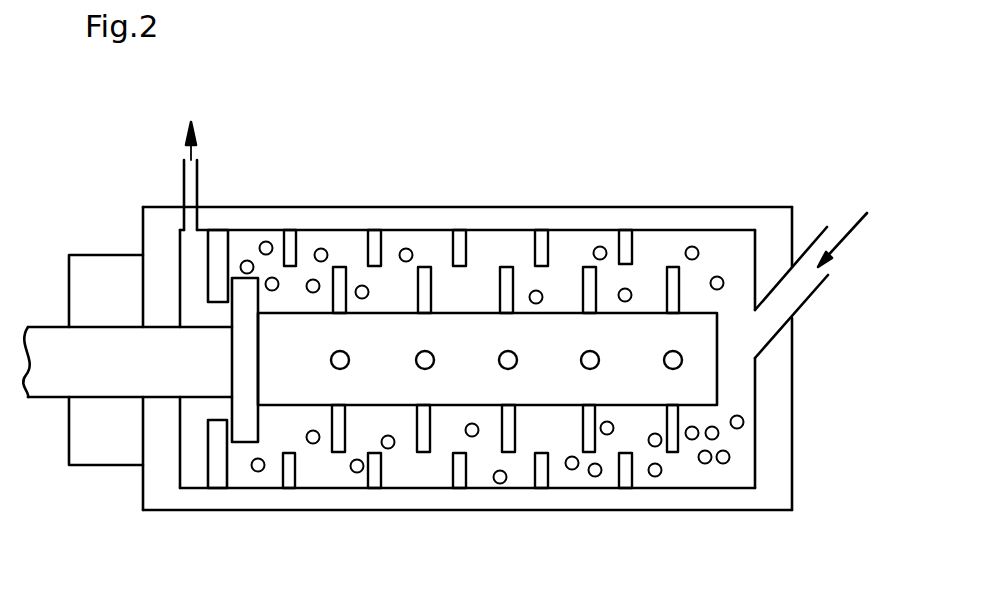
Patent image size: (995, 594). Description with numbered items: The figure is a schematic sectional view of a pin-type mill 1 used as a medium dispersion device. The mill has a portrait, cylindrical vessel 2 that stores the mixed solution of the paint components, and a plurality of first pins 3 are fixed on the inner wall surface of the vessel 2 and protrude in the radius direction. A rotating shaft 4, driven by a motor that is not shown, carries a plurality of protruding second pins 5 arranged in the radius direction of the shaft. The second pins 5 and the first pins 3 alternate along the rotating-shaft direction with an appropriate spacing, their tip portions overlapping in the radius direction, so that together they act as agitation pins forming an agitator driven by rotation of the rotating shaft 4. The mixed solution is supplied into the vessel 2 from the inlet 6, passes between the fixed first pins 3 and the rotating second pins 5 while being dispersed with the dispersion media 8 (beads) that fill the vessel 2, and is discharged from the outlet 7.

The pin-type mill 1 is at (610, 157).
The vessel 2 is at (310, 511).
The first pins 3 is at (540, 488).
The rotating shaft 4 is at (290, 383).
The second pins 5 is at (588, 272).
The inlet 6 is at (802, 290).
The outlet 7 is at (200, 173).
The dispersion media 8 is at (715, 462).